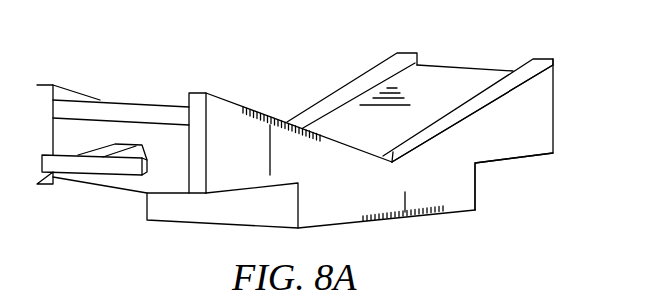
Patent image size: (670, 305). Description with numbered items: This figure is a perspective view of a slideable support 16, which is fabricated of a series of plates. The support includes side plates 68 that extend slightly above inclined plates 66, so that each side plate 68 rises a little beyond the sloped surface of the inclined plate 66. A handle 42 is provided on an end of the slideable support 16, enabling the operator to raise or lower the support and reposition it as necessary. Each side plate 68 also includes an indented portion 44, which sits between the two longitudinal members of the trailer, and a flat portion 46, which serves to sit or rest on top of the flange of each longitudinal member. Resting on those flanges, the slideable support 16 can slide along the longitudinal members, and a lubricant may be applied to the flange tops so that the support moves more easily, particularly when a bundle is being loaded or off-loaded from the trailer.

The slideable support 16 is at (229, 102).
The handle 42 is at (100, 167).
The indented portion 44 is at (438, 200).
The flat portion 46 is at (512, 160).
The inclined plate 66 is at (453, 77).
The side plate 68 is at (380, 70).